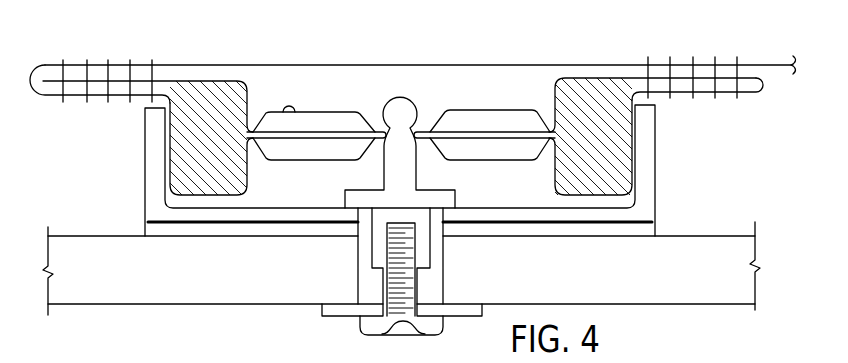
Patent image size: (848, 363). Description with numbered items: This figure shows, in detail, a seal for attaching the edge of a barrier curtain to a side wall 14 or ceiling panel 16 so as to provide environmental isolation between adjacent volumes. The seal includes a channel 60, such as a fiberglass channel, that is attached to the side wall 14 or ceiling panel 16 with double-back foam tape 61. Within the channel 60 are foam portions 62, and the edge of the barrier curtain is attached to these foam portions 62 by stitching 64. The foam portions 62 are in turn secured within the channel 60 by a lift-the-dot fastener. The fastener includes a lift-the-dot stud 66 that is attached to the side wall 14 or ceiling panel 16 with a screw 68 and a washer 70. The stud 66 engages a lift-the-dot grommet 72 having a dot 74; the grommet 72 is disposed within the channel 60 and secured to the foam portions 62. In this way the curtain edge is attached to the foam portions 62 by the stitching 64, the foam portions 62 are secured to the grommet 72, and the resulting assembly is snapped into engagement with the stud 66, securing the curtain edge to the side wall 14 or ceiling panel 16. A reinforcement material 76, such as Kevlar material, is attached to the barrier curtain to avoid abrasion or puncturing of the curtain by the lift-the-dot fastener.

The side wall 14 is at (416, 256).
The ceiling panel 16 is at (717, 234).
The channel 60 is at (657, 178).
The double-back foam tape 61 is at (240, 238).
The foam portions 62 is at (200, 97).
The stitching 64 is at (63, 63).
The lift-the-dot stud 66 is at (405, 98).
The screw 68 is at (360, 330).
The washer 70 is at (325, 316).
The lift-the-dot grommet 72 is at (333, 110).
The dot 74 is at (287, 107).
The reinforcement material 76 is at (470, 76).